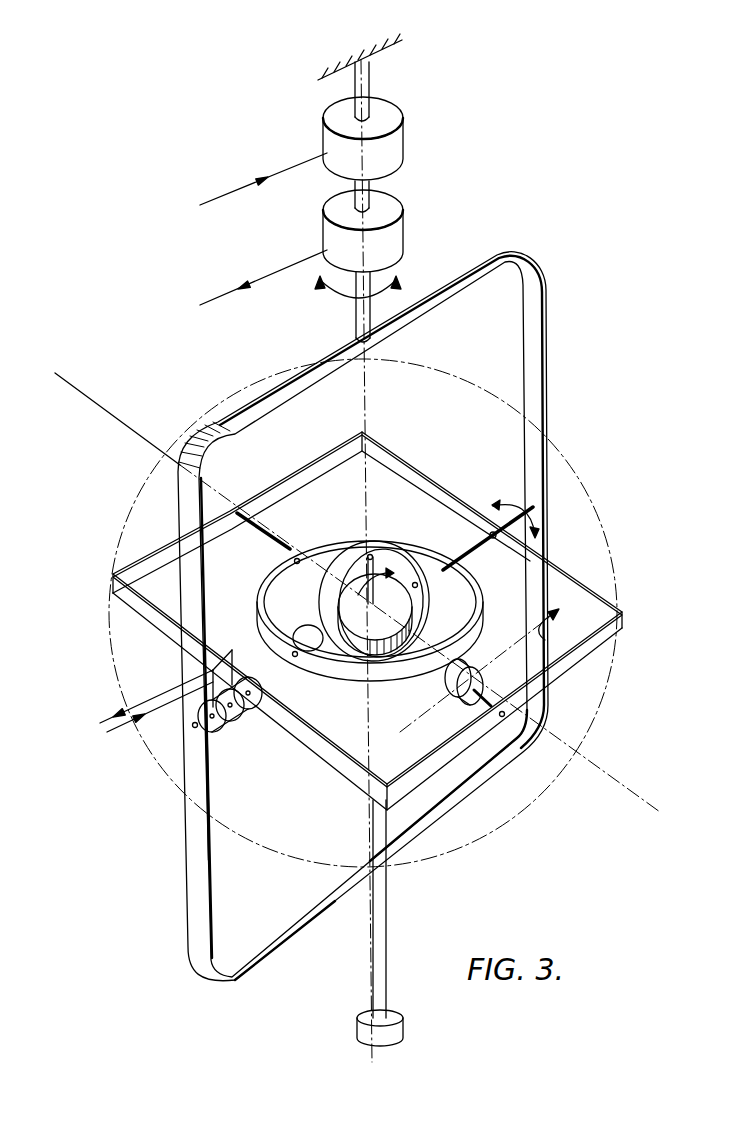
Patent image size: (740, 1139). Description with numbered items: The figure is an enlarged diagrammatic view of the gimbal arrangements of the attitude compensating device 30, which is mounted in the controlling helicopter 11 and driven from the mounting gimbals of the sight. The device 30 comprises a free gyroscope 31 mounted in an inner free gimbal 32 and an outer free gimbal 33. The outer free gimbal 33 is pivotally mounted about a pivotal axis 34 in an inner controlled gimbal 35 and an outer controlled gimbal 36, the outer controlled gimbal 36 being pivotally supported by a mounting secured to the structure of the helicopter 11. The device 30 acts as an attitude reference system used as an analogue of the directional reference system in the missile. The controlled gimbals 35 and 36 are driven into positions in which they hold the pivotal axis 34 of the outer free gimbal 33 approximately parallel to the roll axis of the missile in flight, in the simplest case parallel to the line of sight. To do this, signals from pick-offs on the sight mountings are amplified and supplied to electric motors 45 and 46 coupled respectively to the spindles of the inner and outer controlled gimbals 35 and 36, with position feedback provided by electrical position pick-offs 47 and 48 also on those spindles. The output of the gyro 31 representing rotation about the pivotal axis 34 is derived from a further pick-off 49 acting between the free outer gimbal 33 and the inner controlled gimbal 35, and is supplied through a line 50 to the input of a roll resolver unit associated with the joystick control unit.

The helicopter 11 is at (397, 1002).
The attitude compensating device 30 is at (557, 362).
The free gyroscope 31 is at (400, 590).
The inner free gimbal 32 is at (427, 607).
The outer free gimbal 33 is at (396, 677).
The pivotal axis 34 is at (122, 422).
The inner controlled gimbal 35 is at (583, 580).
The outer controlled gimbal 36 is at (198, 773).
The electric motor 45 is at (220, 733).
The electric motor 46 is at (405, 137).
The electrical position pick-off 47 is at (250, 715).
The electrical position pick-off 48 is at (404, 238).
The pick-off 49 is at (443, 700).
The line 50 is at (545, 640).